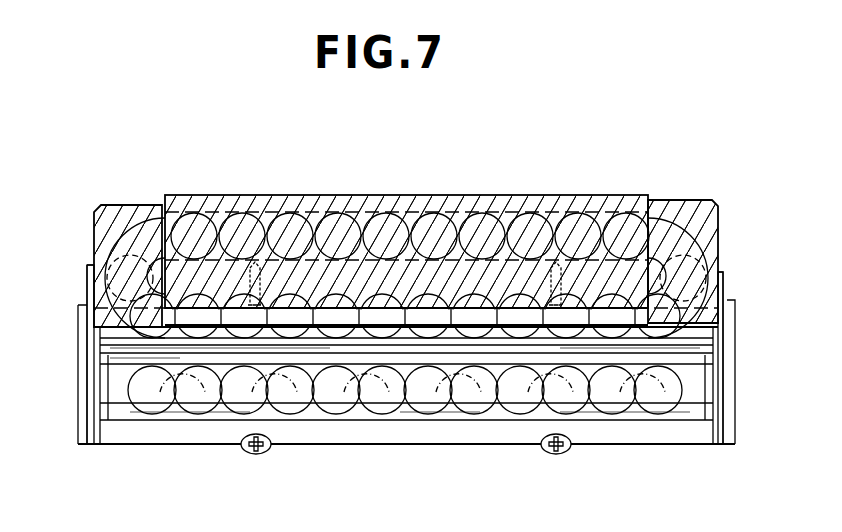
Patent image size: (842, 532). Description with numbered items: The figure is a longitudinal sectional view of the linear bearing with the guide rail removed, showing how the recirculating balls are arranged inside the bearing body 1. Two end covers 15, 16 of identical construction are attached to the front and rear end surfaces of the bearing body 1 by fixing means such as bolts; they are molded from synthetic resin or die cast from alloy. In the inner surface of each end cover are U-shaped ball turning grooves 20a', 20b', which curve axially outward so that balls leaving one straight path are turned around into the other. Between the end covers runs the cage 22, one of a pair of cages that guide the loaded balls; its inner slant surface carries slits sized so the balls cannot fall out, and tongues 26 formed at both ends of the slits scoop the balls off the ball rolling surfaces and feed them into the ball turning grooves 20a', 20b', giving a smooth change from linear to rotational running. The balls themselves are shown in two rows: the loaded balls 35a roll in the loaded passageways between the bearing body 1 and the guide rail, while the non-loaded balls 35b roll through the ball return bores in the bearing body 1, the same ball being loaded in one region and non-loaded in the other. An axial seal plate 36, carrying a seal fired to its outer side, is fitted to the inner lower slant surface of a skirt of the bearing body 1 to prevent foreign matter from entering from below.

The bearing body 1 is at (377, 195).
The end cover 15 is at (102, 231).
The end cover 16 is at (704, 227).
The U-shaped ball turning groove 20a' is at (63, 354).
The U-shaped ball turning groove 20b' is at (753, 356).
The cage 22 is at (117, 372).
The tongue 26 is at (130, 337).
The loaded ball 35a is at (292, 310).
The non-loaded ball 35b is at (244, 228).
The axial seal plate 36 is at (366, 438).